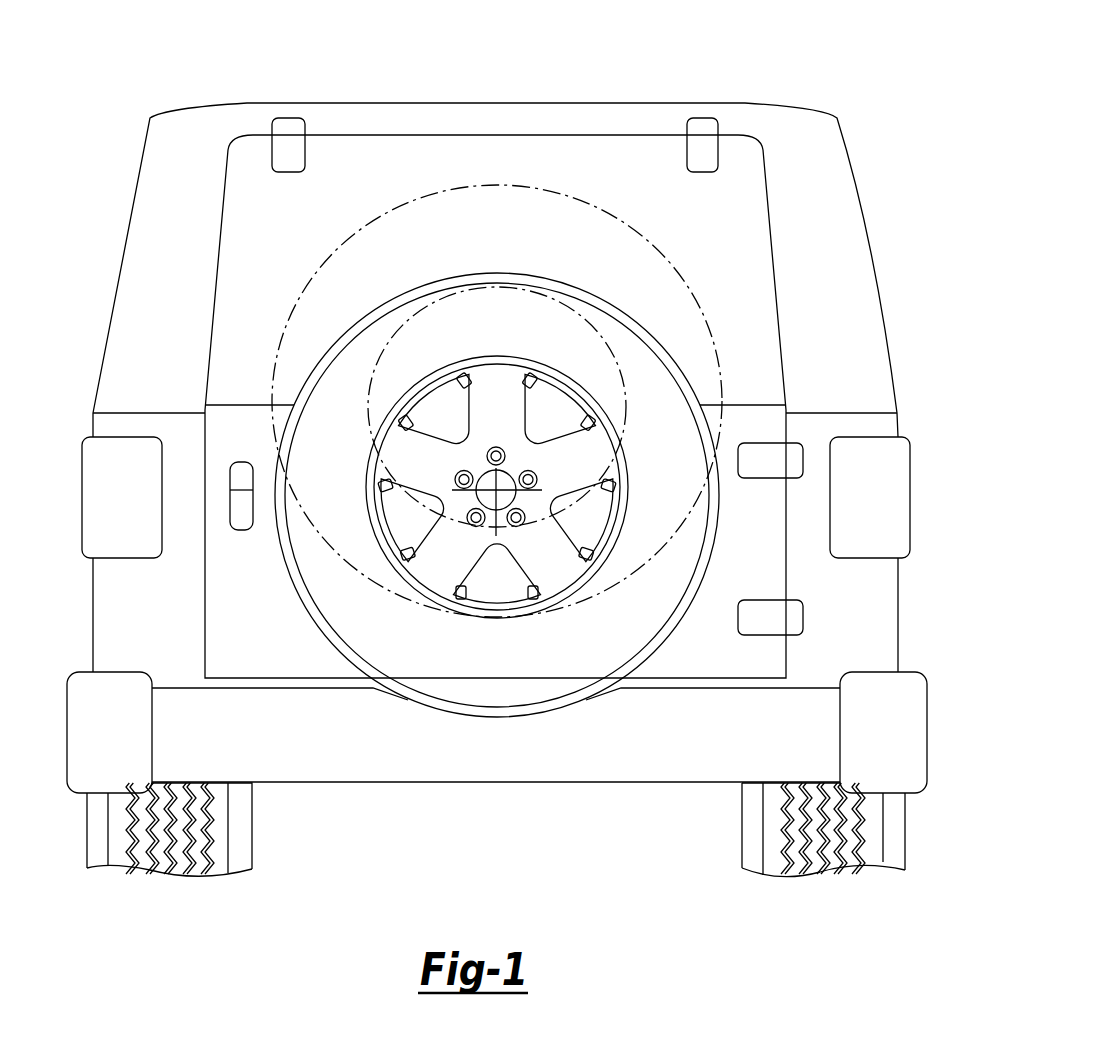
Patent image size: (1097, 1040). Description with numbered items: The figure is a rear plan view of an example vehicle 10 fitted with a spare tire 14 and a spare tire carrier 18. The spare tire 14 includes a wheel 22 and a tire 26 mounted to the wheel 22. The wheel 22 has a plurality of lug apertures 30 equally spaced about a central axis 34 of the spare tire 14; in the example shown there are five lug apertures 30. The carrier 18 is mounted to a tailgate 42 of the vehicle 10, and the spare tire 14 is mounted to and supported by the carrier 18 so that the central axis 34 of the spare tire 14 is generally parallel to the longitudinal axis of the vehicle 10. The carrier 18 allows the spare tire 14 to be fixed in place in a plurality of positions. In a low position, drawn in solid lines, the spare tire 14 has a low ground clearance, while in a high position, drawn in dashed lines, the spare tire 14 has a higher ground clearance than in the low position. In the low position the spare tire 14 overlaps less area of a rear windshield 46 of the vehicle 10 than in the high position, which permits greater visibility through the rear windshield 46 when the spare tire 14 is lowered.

The vehicle 10 is at (688, 66).
The spare tire 14 is at (280, 565).
The spare tire carrier 18 is at (508, 415).
The wheel 22 is at (547, 560).
The tire 26 is at (322, 570).
The lug apertures 30 is at (533, 477).
The central axis 34 is at (492, 488).
The tailgate 42 is at (755, 578).
The rear windshield 46 is at (337, 183).